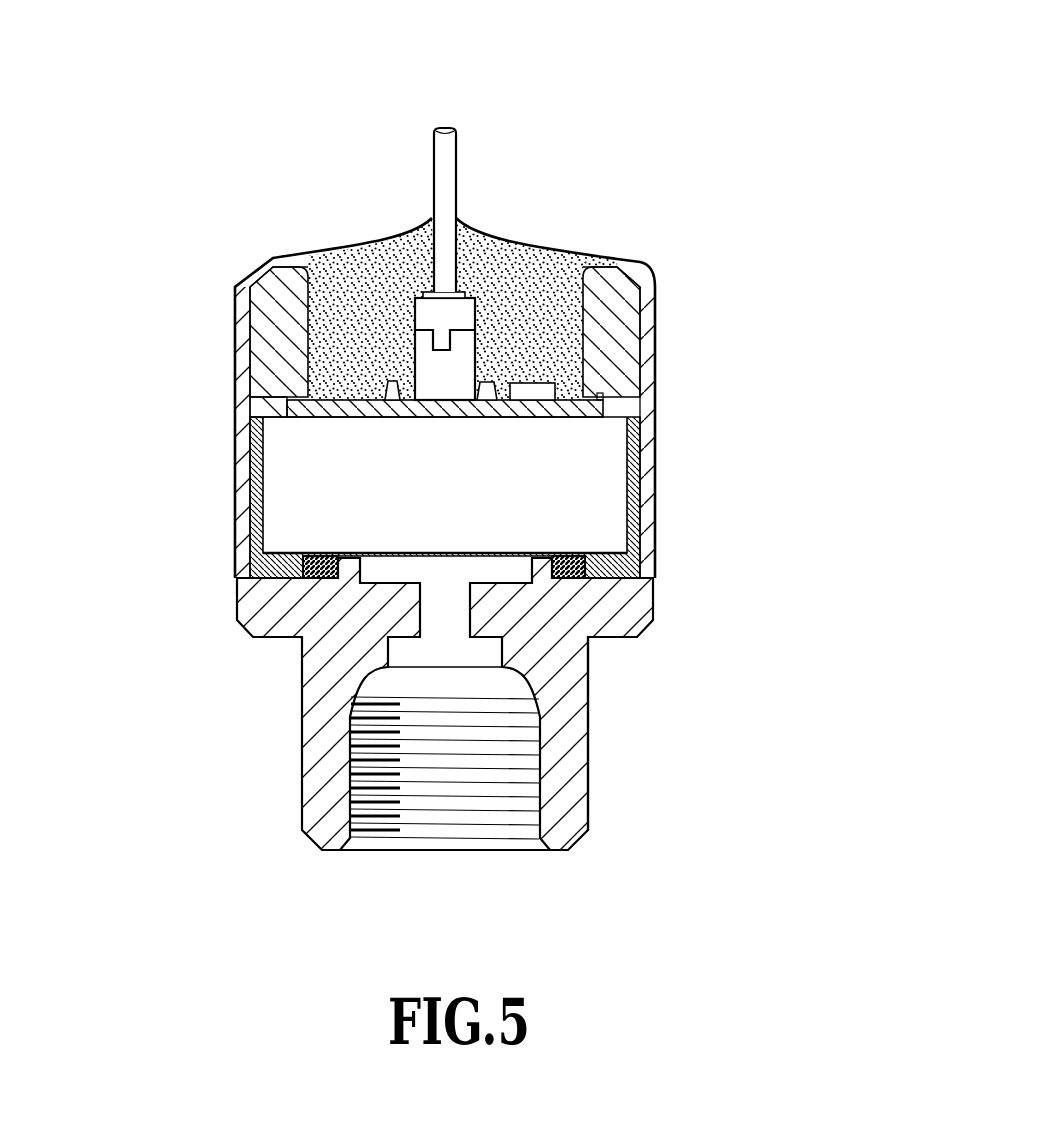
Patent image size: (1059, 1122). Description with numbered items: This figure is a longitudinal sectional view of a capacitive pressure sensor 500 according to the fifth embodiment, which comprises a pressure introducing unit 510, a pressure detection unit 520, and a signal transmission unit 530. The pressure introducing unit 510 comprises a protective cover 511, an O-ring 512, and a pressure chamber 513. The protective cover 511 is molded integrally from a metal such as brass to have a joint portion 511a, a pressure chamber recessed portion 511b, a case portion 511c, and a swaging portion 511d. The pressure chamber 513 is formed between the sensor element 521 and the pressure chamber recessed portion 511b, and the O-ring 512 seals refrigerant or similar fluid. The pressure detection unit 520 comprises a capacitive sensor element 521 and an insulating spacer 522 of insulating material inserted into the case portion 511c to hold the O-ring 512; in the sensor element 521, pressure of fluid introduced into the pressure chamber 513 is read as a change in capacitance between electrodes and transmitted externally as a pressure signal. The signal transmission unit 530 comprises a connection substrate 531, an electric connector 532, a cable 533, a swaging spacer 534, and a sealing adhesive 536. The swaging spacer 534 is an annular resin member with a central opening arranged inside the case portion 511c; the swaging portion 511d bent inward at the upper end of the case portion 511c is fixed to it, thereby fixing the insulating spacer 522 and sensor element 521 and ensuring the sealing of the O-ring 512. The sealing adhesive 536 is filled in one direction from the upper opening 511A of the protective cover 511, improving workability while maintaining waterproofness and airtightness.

The capacitive pressure sensor 500 is at (620, 126).
The pressure introducing unit 510 is at (262, 699).
The protective cover 511 is at (588, 688).
The joint portion 511a is at (572, 787).
The pressure chamber recessed portion 511b is at (532, 568).
The case portion 511c is at (234, 478).
The swaging portion 511d is at (258, 273).
The upper opening 511A is at (628, 285).
The O-ring 512 is at (537, 571).
The pressure chamber 513 is at (385, 565).
The pressure detection unit 520 is at (200, 434).
The capacitive sensor element 521 is at (613, 523).
The insulating spacer 522 is at (635, 462).
The signal transmission unit 530 is at (200, 284).
The connection substrate 531 is at (540, 407).
The electric connector 532 is at (427, 370).
The cable 533 is at (447, 170).
The swaging spacer 534 is at (600, 285).
The sealing adhesive 536 is at (520, 258).